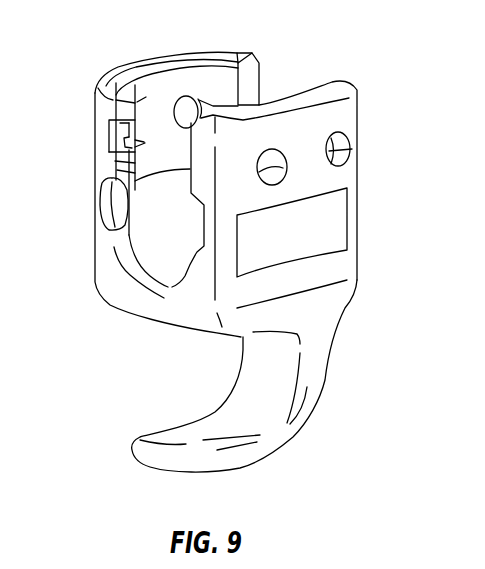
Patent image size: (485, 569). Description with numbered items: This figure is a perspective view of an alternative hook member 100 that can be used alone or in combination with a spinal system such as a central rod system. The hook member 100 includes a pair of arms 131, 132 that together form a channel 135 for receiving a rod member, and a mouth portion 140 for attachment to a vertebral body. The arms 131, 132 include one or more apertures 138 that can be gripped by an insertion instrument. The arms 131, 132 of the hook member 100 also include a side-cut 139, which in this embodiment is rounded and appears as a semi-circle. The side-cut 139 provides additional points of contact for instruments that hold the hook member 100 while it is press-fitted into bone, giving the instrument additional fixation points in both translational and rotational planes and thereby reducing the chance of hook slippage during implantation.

The hook member 100 is at (226, 50).
The arm 131 is at (106, 86).
The arm 132 is at (340, 80).
The channel 135 is at (268, 91).
The aperture 138 is at (353, 150).
The side-cut 139 is at (112, 220).
The mouth portion 140 is at (320, 410).